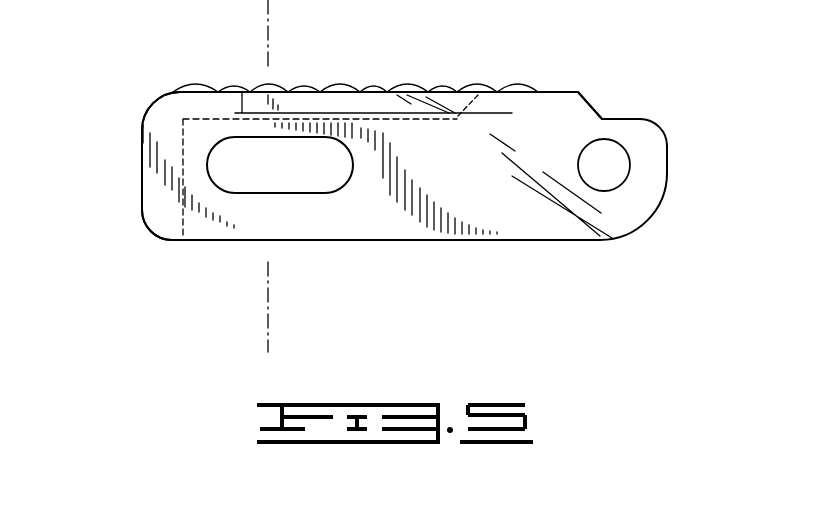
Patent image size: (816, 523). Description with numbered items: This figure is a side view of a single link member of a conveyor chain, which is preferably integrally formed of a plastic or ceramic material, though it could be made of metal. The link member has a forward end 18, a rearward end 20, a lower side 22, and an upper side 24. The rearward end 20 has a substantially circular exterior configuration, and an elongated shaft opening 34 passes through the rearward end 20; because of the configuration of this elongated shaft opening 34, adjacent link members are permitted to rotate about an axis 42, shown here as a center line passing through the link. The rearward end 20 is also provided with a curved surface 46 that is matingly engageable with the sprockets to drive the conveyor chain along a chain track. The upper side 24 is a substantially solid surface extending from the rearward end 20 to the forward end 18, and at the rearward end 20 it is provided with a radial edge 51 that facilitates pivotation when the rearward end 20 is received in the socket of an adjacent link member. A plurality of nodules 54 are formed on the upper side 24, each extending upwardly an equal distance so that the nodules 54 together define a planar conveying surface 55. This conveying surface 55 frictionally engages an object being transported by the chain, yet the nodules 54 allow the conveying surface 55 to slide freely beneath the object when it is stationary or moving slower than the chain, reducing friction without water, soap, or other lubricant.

The forward end 18 is at (667, 160).
The rearward end 20 is at (142, 150).
The lower side 22 is at (376, 240).
The upper side 24 is at (557, 92).
The elongated shaft opening 34 is at (208, 168).
The axis 42 is at (270, 6).
The curved surface 46 is at (150, 233).
The radial edge 51 is at (152, 102).
The nodules 54 is at (343, 88).
The planar conveying surface 55 is at (478, 88).